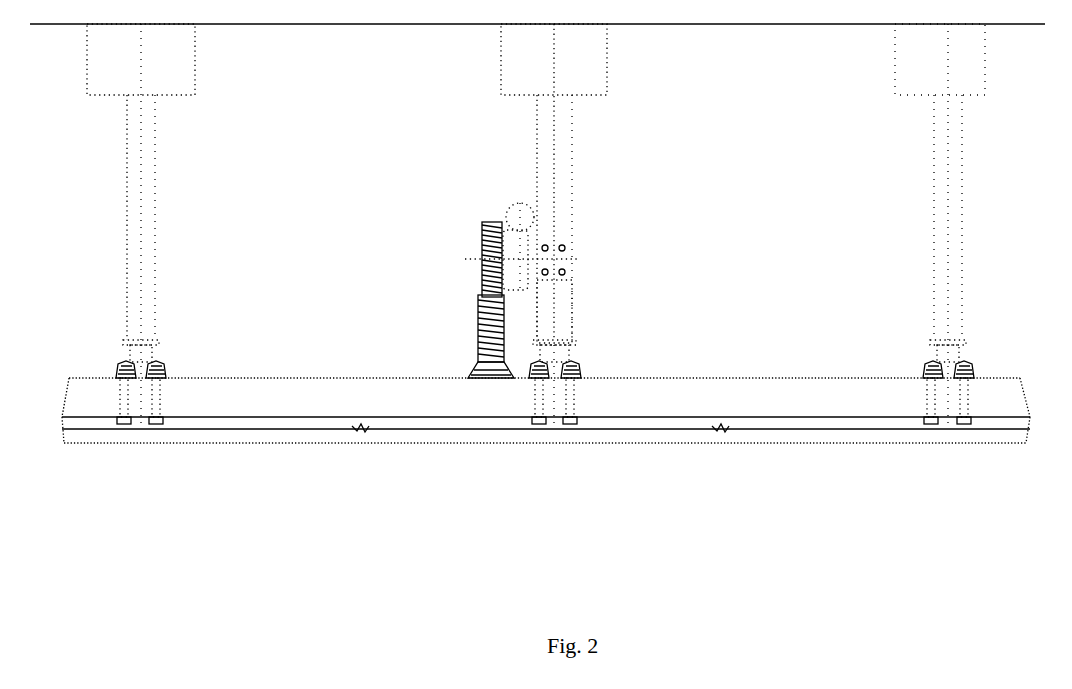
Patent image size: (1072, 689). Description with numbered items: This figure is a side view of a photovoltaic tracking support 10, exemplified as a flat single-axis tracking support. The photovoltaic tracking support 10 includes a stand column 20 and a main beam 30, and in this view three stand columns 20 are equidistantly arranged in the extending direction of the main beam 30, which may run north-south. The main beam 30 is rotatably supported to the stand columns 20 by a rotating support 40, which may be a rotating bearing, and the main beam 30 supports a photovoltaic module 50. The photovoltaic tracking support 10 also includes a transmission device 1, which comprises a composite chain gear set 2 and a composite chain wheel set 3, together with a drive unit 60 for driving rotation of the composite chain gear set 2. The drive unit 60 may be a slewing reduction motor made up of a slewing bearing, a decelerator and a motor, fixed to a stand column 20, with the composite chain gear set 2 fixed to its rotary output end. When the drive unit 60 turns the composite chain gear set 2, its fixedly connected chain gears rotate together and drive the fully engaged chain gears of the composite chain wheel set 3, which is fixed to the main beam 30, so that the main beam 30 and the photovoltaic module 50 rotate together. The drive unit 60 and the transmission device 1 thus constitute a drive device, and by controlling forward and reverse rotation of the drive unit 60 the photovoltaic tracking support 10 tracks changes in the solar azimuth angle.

The transmission device 1 is at (447, 272).
The composite chain gear set 2 is at (480, 240).
The composite chain wheel set 3 is at (478, 330).
The photovoltaic tracking support 10 is at (546, 457).
The stand column 20 is at (175, 443).
The main beam 30 is at (225, 397).
The rotating support 40 is at (572, 393).
The photovoltaic module 50 is at (560, 160).
The drive unit 60 is at (513, 208).